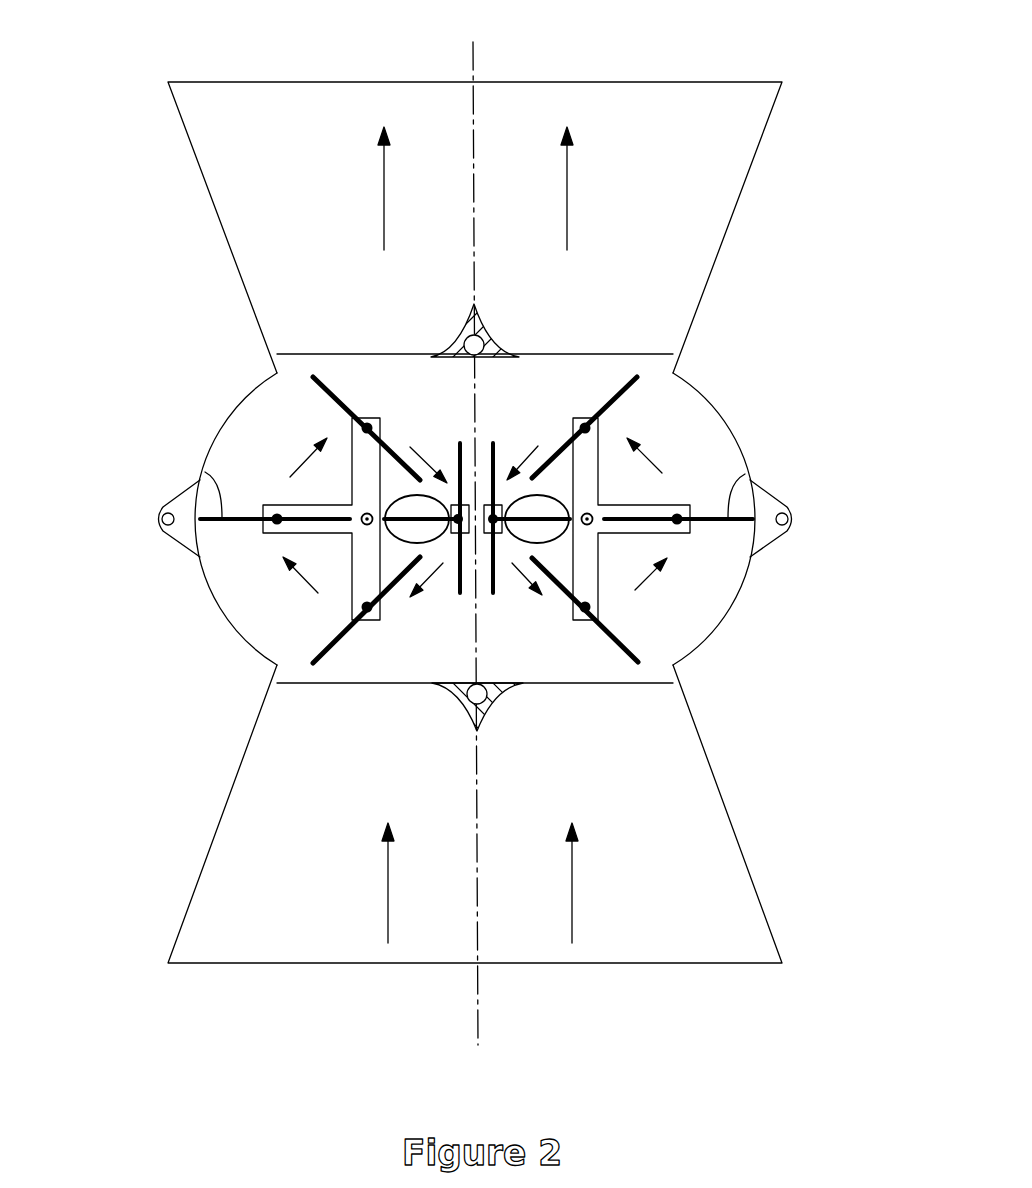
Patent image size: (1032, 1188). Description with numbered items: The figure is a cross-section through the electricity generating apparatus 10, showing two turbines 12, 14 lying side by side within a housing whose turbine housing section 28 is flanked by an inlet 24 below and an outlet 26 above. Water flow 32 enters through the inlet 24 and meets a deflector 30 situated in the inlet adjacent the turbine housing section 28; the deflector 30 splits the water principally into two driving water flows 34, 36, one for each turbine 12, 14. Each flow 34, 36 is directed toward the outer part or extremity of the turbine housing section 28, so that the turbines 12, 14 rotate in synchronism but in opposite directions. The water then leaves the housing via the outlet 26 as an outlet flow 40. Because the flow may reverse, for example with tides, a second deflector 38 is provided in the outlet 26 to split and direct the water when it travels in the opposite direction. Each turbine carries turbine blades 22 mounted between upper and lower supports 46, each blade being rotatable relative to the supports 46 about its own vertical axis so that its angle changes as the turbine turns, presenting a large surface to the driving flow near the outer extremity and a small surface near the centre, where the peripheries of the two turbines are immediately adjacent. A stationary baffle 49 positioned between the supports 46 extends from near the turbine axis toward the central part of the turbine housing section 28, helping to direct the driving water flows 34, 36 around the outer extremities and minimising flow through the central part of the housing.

The electricity generating apparatus 10 is at (151, 837).
The turbine 12 is at (696, 628).
The turbine 14 is at (233, 567).
The turbine blades 22 is at (205, 472).
The inlet 24 is at (750, 850).
The outlet 26 is at (752, 158).
The turbine housing section 28 is at (220, 611).
The deflector 30 is at (496, 690).
The water flow 32 is at (387, 917).
The driving water flow 34 is at (316, 594).
The driving water flow 36 is at (646, 586).
The second deflector 38 is at (488, 342).
The outlet flow 40 is at (384, 199).
The upper and lower supports 46 is at (590, 466).
The stationary baffle 49 is at (408, 496).